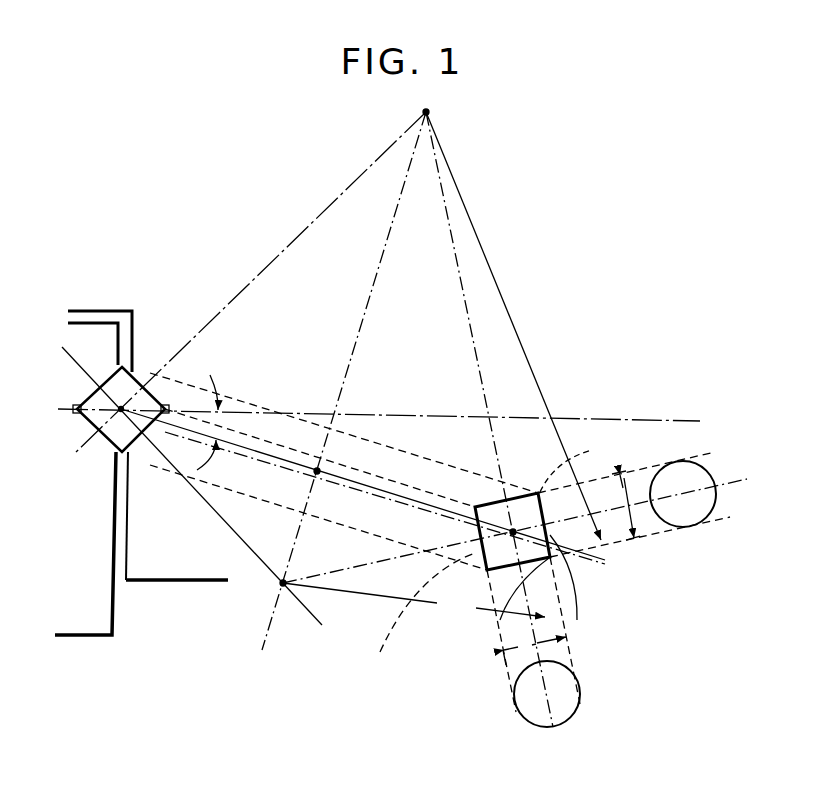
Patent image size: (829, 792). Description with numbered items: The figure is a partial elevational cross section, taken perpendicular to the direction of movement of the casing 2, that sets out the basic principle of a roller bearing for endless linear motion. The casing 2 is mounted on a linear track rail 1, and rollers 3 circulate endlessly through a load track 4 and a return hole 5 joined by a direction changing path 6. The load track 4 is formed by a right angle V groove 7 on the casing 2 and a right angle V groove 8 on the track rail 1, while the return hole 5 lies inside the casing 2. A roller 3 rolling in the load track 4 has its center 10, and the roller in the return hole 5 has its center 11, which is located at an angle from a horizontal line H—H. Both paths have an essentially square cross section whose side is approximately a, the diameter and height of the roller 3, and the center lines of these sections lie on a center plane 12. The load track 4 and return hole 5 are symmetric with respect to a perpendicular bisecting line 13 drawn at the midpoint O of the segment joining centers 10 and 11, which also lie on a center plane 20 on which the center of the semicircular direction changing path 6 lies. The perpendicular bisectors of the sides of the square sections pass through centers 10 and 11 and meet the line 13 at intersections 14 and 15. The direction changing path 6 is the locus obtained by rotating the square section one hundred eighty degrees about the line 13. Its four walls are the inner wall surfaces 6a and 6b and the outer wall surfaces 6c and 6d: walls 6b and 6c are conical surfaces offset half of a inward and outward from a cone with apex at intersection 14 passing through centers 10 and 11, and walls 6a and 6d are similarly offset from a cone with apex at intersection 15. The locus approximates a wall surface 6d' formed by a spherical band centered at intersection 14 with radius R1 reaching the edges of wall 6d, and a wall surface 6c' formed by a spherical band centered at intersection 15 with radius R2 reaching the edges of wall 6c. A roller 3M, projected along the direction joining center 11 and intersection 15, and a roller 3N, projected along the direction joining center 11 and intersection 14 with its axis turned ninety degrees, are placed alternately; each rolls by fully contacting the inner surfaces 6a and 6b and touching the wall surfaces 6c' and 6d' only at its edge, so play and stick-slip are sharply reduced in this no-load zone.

The track rail 1 is at (66, 556).
The casing 2 is at (163, 553).
The roller 3 is at (108, 378).
The load track 4 is at (131, 382).
The return hole 5 is at (508, 560).
The direction changing path 6 is at (340, 512).
The inner wall surface 6a is at (467, 483).
The inner wall surface 6b is at (431, 576).
The outer wall surface 6c is at (626, 464).
The wall surface 6c' is at (640, 559).
The outer wall surface 6d is at (507, 635).
The wall surface 6d' is at (580, 619).
The right angle V groove 7 is at (152, 388).
The right angle V groove 8 is at (88, 400).
The center 10 is at (118, 414).
The center 11 is at (552, 560).
The center plane 12 is at (403, 540).
The perpendicular bisecting line 13 is at (372, 296).
The intersection 14 is at (430, 112).
The intersection 15 is at (281, 586).
The center plane 20 is at (261, 463).
The roller 3M is at (700, 515).
The roller 3N is at (579, 695).
The radius R1 is at (513, 326).
The radius R2 is at (414, 602).
The horizontal line H is at (379, 418).
The midpoint O is at (327, 469).
The side length a is at (571, 568).